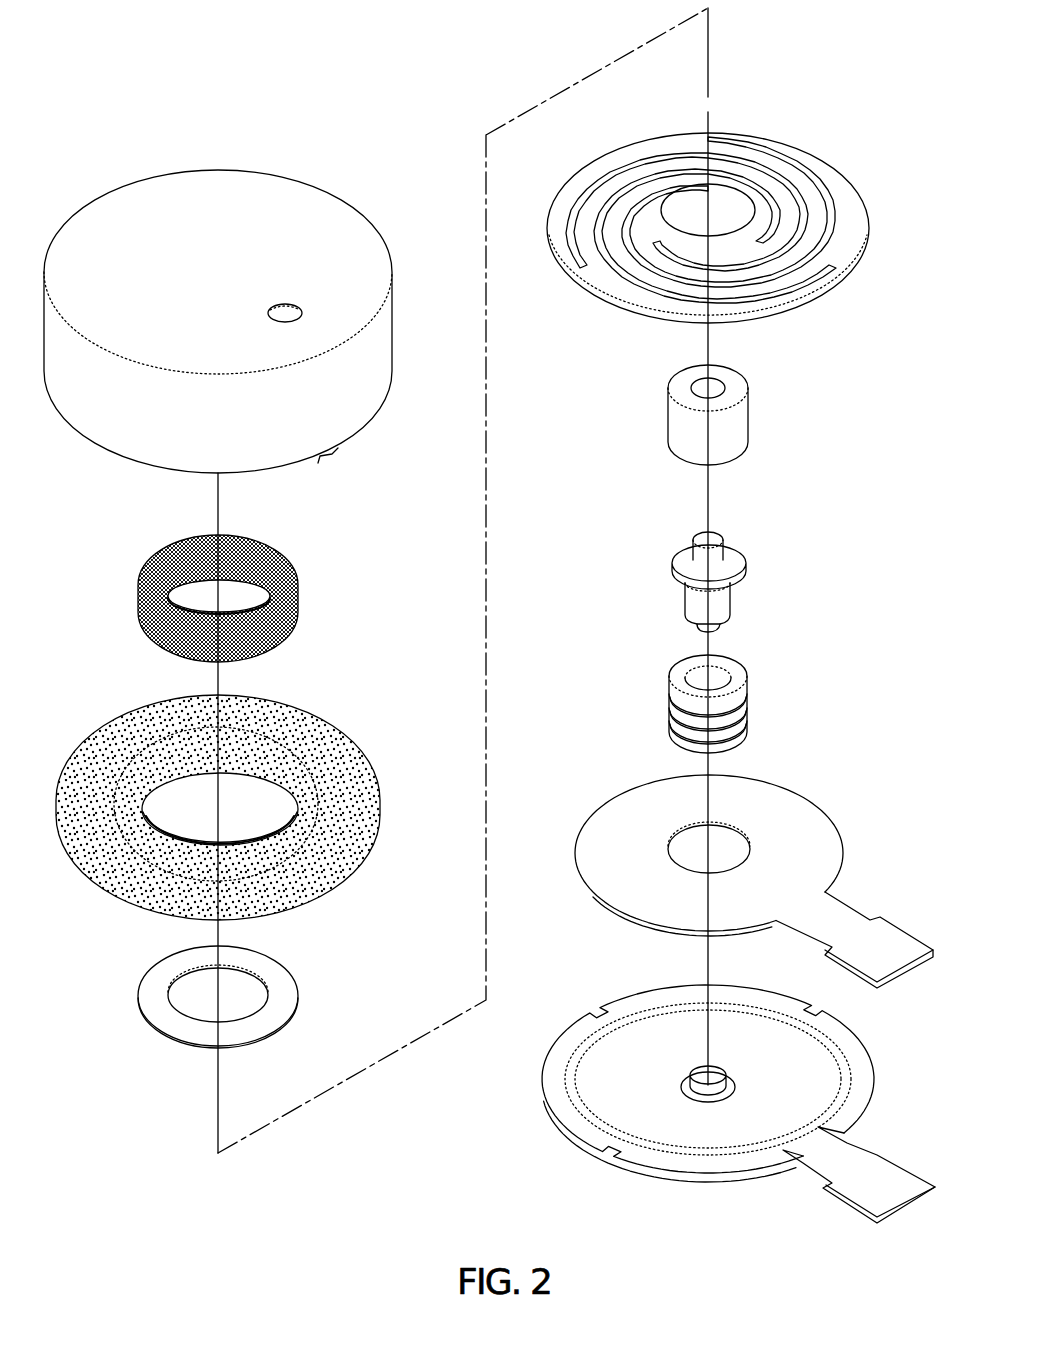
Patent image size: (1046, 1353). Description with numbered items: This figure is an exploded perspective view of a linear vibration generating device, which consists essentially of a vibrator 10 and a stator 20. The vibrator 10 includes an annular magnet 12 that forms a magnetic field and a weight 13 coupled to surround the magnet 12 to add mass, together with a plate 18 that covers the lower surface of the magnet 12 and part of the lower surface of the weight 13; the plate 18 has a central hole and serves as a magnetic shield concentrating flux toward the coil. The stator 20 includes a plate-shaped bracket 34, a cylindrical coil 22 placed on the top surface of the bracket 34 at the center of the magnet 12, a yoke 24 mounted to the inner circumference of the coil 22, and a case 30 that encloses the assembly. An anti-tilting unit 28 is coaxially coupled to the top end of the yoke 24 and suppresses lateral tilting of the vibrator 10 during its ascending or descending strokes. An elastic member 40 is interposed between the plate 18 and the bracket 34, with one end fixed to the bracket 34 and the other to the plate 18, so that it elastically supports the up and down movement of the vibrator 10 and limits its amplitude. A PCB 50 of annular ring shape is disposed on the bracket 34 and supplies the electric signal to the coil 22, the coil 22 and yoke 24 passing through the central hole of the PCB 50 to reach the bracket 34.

The vibrator 10 is at (384, 542).
The magnet 12 is at (297, 565).
The weight 13 is at (318, 733).
The plate 18 is at (285, 985).
The stator 20 is at (841, 565).
The coil 22 is at (755, 710).
The yoke 24 is at (730, 596).
The anti-tilting unit 28 is at (735, 430).
The case 30 is at (342, 237).
The bracket 34 is at (858, 1068).
The elastic member 40 is at (853, 208).
The PCB 50 is at (808, 828).